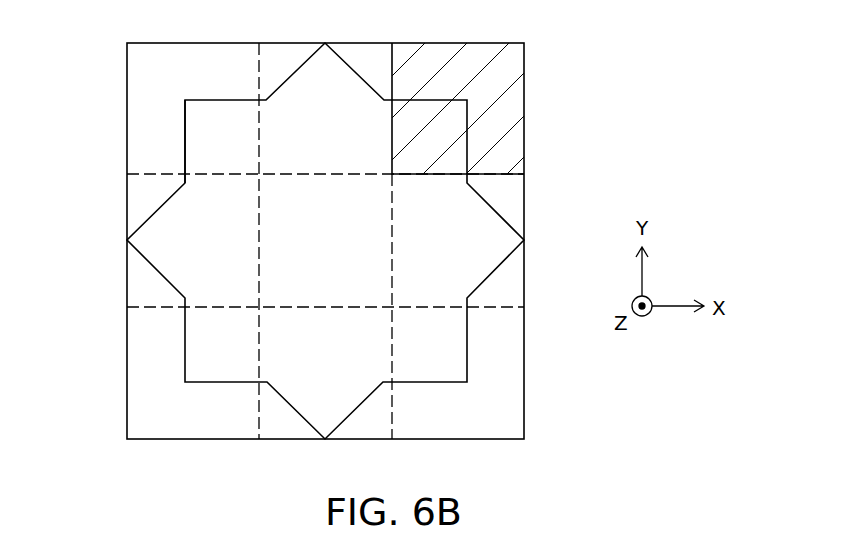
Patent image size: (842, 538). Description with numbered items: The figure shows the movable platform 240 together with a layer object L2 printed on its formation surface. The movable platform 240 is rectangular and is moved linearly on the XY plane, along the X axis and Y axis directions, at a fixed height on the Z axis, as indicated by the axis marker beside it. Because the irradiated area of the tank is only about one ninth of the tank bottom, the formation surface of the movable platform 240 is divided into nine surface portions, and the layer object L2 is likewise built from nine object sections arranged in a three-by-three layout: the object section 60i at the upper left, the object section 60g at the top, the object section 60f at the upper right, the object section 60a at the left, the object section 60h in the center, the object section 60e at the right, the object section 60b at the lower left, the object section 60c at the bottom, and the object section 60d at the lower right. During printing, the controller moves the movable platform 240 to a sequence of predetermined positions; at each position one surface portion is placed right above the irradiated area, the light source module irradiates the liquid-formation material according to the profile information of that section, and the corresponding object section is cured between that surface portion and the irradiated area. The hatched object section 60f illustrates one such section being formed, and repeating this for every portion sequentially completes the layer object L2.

The movable platform 240 is at (153, 42).
The object section 60a is at (147, 250).
The object section 60b is at (205, 354).
The object section 60c is at (314, 411).
The object section 60d is at (445, 353).
The object section 60e is at (505, 248).
The object section 60f is at (445, 120).
The object section 60g is at (314, 75).
The object section 60h is at (300, 210).
The object section 60i is at (205, 122).
The layer object L2 is at (185, 158).